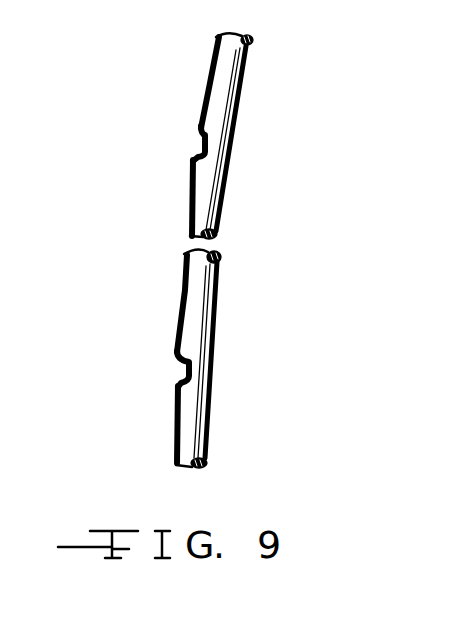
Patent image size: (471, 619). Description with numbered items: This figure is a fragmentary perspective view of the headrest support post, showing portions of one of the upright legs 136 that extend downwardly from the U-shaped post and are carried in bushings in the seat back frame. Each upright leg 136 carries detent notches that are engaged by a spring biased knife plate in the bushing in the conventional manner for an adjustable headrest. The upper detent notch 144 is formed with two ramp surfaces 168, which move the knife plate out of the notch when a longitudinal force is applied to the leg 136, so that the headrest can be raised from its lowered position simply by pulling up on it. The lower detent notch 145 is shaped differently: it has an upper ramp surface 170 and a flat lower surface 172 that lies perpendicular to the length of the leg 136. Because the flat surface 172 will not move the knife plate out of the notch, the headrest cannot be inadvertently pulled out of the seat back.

The upright leg 136 is at (243, 81).
The upper detent notch 144 is at (182, 150).
The ramp surface 168 is at (201, 136).
The lower detent notch 145 is at (160, 376).
The upper ramp surface 170 is at (176, 362).
The flat lower surface 172 is at (178, 379).